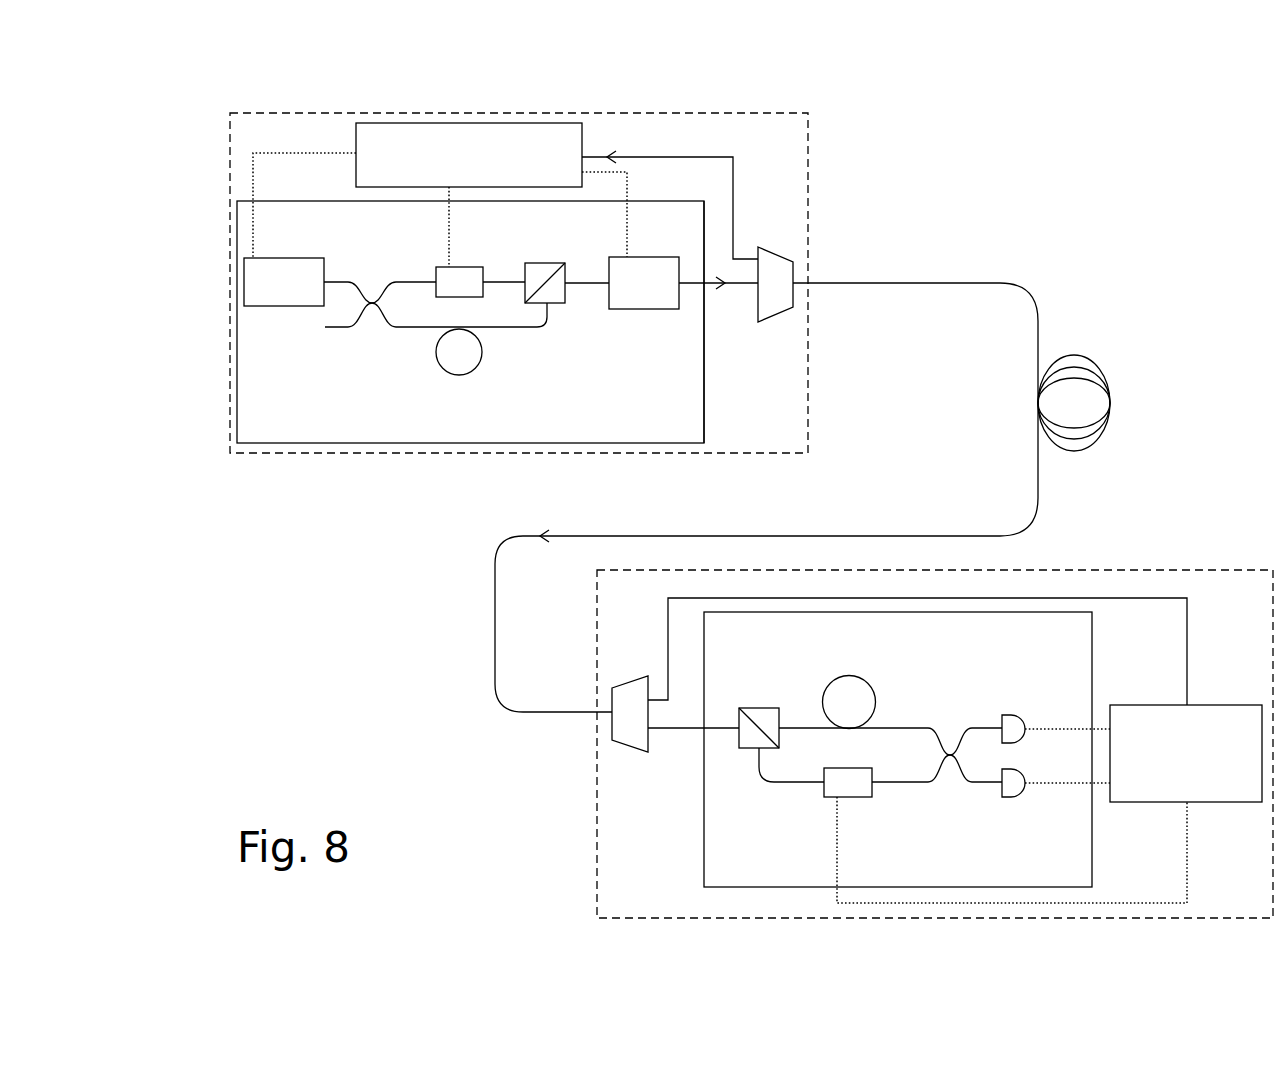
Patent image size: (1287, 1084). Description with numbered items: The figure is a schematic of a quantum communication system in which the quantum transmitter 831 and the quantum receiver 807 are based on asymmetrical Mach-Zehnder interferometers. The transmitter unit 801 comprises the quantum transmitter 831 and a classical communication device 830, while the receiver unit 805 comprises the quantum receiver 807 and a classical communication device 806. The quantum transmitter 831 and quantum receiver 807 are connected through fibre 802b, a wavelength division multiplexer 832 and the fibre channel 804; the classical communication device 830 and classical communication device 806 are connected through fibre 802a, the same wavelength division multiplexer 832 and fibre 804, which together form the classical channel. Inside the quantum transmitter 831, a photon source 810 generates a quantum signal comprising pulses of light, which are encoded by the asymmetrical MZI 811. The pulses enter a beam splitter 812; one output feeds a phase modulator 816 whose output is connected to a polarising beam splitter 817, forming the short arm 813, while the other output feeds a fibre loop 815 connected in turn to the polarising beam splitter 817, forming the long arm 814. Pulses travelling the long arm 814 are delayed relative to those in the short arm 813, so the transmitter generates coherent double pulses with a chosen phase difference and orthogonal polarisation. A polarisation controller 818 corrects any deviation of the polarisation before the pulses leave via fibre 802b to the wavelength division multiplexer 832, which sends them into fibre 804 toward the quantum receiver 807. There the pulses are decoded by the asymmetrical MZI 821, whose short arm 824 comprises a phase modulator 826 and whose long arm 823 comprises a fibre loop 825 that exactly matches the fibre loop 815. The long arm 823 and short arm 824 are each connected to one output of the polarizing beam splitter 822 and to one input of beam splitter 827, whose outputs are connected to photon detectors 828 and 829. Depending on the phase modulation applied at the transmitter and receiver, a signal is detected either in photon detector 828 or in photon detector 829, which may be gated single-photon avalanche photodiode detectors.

The transmitter unit 801 is at (389, 461).
The fibre 802a is at (689, 154).
The fibre 802b is at (724, 299).
The fibre channel 804 is at (980, 290).
The receiver unit 805 is at (594, 836).
The classical communication device 806 is at (1230, 805).
The quantum receiver 807 is at (1094, 642).
The photon source 810 is at (288, 256).
The asymmetrical MZI 811 is at (389, 376).
The beam splitter 812 is at (369, 331).
The short arm 813 is at (407, 276).
The long arm 814 is at (533, 338).
The fibre loop 815 is at (478, 378).
The phase modulator 816 is at (468, 265).
The polarising beam splitter 817 is at (560, 307).
The polarisation controller 818 is at (654, 254).
The asymmetrical MZI 821 is at (779, 818).
The polarizing beam splitter 822 is at (763, 702).
The long arm 823 is at (905, 720).
The short arm 824 is at (905, 787).
The fibre loop 825 is at (866, 676).
The phase modulator 826 is at (857, 801).
The beam splitter 827 is at (952, 734).
The photon detector 828 is at (1018, 712).
The photon detector 829 is at (1018, 802).
The classical communication device 830 is at (352, 128).
The quantum transmitter 831 is at (708, 394).
The wavelength division multiplexer 832 is at (768, 244).